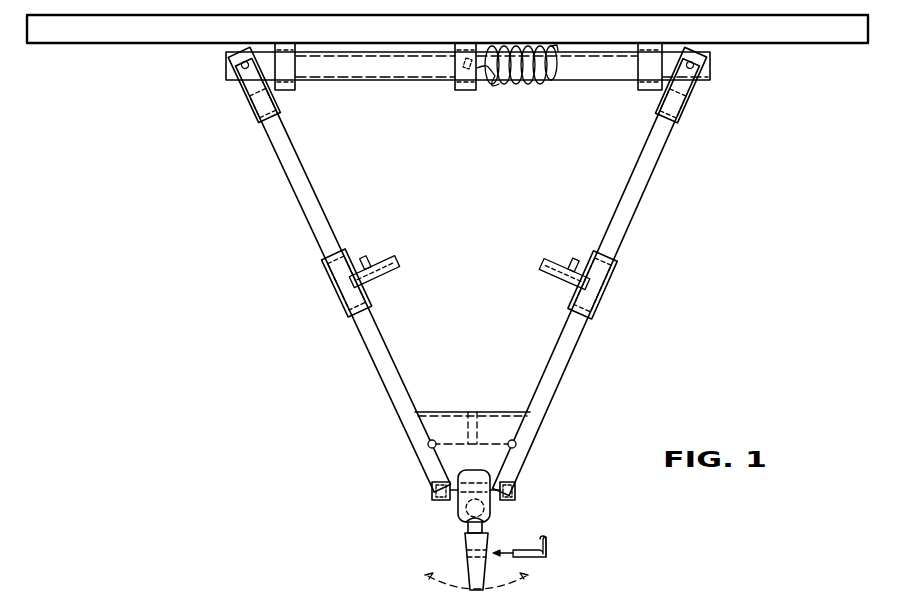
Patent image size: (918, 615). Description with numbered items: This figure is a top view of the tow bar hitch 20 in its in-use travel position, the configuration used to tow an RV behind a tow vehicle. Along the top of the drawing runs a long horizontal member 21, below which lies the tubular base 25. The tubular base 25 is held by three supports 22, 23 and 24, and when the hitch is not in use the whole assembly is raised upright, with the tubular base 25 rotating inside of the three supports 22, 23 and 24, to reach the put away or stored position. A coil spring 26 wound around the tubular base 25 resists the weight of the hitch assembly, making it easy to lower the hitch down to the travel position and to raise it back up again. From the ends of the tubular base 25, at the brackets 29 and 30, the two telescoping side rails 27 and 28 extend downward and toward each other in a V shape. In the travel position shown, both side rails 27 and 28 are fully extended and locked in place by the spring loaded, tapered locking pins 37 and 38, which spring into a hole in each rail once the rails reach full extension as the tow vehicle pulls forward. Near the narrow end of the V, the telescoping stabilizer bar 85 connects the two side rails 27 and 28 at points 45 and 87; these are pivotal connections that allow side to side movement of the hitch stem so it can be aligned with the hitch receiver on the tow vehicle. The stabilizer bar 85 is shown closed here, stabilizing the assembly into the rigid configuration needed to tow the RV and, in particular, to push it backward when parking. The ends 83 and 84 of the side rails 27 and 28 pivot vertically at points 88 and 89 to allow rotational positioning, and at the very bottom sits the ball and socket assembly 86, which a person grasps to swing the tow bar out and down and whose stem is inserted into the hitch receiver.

The tow bar hitch 20 is at (685, 270).
The vehicle frame / bumper 21 is at (148, 44).
The support 22 is at (286, 90).
The support 23 is at (462, 90).
The support 24 is at (645, 89).
The tubular base 25 is at (413, 80).
The coil spring 26 is at (522, 80).
The side rail 27 is at (367, 350).
The side rail 28 is at (583, 330).
The left pivot bracket 29 is at (242, 68).
The right pivot bracket 30 is at (695, 68).
The locking pin 37 is at (392, 270).
The locking pin 38 is at (551, 258).
The pivotal connection point 45 is at (516, 443).
The end of side rail 83 is at (443, 500).
The end of side rail 84 is at (502, 502).
The telescoping stabilizer bar 85 is at (470, 410).
The ball and socket assembly 86 is at (470, 528).
The pivotal connection point 87 is at (428, 443).
The pivot point 88 is at (440, 486).
The pivot point 89 is at (510, 486).